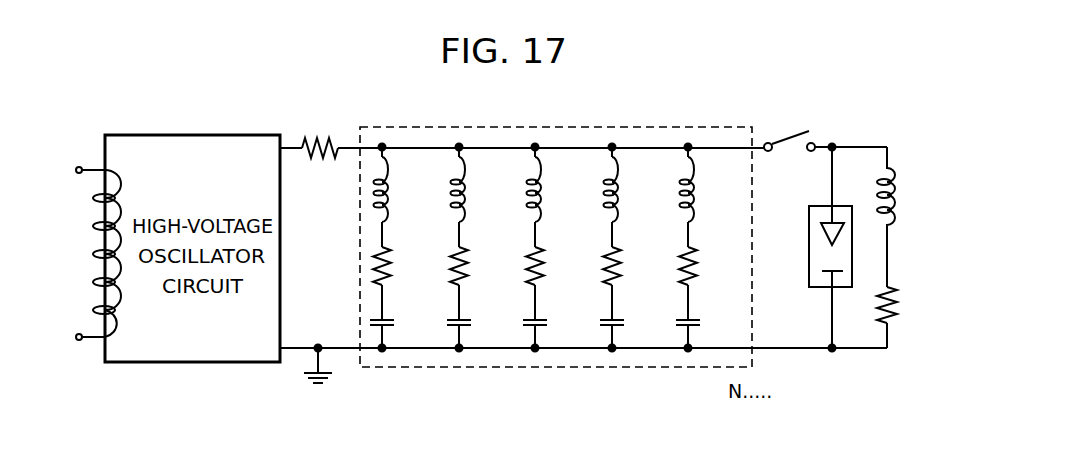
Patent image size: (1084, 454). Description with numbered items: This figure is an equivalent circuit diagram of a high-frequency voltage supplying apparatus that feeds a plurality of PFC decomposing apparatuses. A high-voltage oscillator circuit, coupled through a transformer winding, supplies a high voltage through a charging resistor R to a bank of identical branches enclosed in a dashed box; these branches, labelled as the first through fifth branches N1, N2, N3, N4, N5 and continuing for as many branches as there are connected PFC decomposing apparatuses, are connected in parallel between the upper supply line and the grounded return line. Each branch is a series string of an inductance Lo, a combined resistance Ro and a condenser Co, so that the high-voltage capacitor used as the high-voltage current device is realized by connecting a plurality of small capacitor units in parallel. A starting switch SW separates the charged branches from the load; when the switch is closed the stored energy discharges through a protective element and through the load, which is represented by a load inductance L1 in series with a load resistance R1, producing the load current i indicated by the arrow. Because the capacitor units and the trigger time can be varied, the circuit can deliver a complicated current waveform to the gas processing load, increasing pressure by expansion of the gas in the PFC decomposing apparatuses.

The charging resistor R is at (320, 133).
The starting switch SW is at (789, 129).
The load current i is at (858, 133).
The load inductance L1 is at (904, 217).
The load resistance R1 is at (904, 317).
The inductance Lo is at (550, 189).
The combined resistance Ro is at (550, 266).
The condenser Co is at (548, 323).
The first PFC decomposing apparatus branch N1 is at (388, 273).
The second PFC decomposing apparatus branch N2 is at (465, 273).
The third PFC decomposing apparatus branch N3 is at (541, 273).
The fourth PFC decomposing apparatus branch N4 is at (618, 273).
The fifth PFC decomposing apparatus branch N5 is at (694, 273).